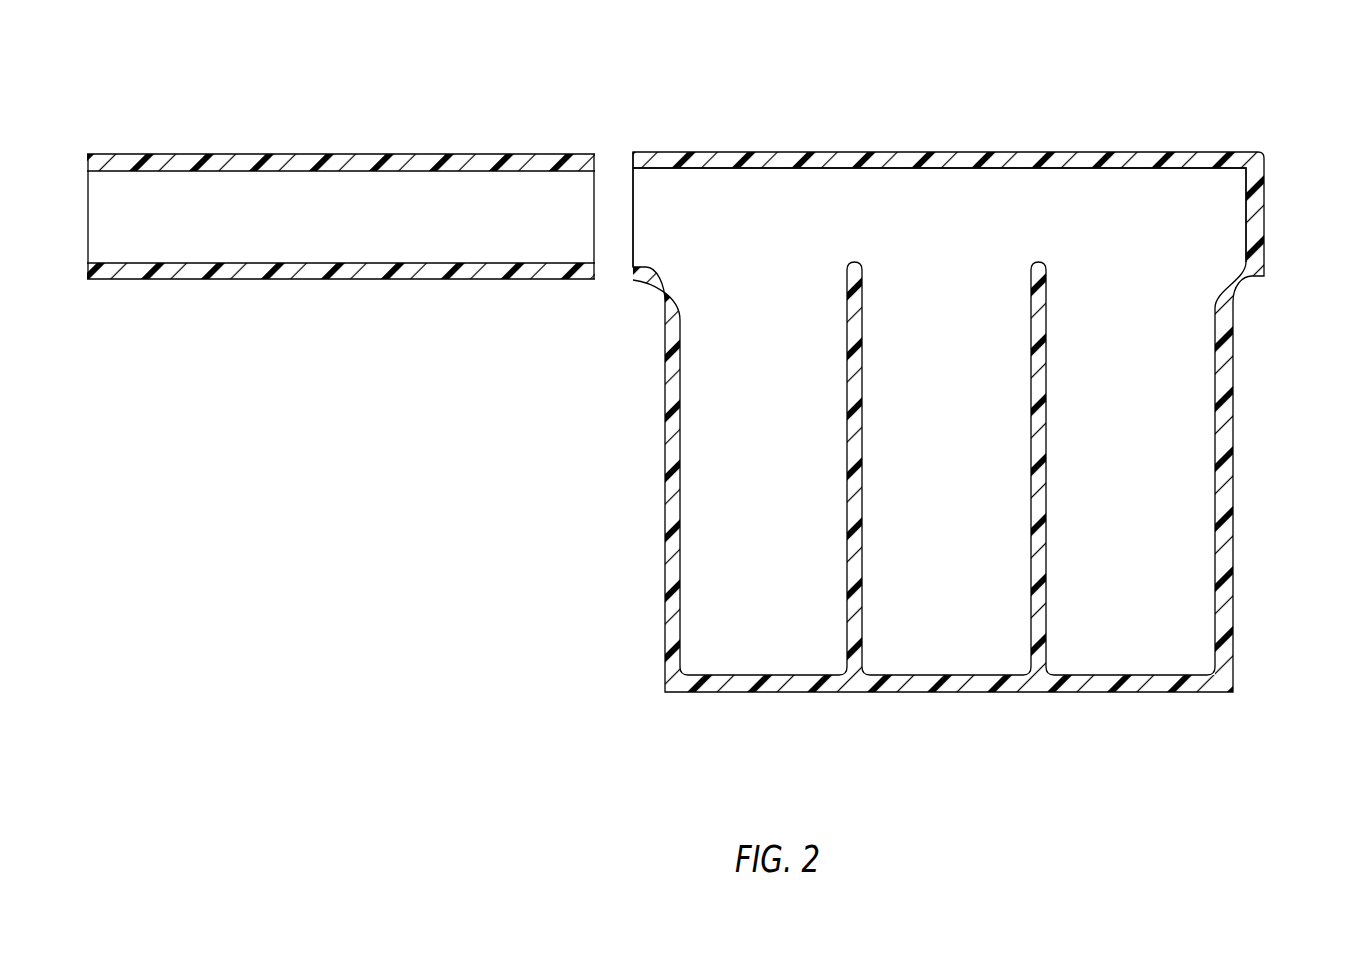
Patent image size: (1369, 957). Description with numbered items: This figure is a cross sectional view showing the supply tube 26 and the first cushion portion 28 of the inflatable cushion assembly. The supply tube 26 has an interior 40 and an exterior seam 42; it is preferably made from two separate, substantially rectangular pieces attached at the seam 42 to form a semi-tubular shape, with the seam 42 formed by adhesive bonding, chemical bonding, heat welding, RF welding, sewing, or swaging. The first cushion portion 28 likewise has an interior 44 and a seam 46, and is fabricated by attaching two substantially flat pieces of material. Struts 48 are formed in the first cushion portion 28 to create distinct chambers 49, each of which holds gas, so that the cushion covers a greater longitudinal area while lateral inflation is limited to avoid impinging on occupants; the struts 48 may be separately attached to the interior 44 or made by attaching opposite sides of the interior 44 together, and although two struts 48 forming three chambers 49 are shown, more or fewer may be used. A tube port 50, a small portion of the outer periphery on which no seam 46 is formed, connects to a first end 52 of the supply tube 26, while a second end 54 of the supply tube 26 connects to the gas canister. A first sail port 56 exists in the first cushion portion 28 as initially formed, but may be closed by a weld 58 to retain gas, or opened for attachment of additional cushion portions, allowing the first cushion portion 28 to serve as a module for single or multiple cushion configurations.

The supply tube 26 is at (328, 204).
The first cushion portion 28 is at (997, 368).
The interior 40 is at (340, 236).
The exterior seam 42 is at (550, 153).
The interior 44 is at (1165, 198).
The seam 46 is at (1105, 152).
The struts 48 is at (1030, 564).
The chambers 49 is at (1105, 437).
The tube port 50 is at (658, 182).
The first end 52 is at (540, 240).
The second end 54 is at (98, 246).
The first sail port 56 is at (1236, 208).
The weld 58 is at (1258, 257).